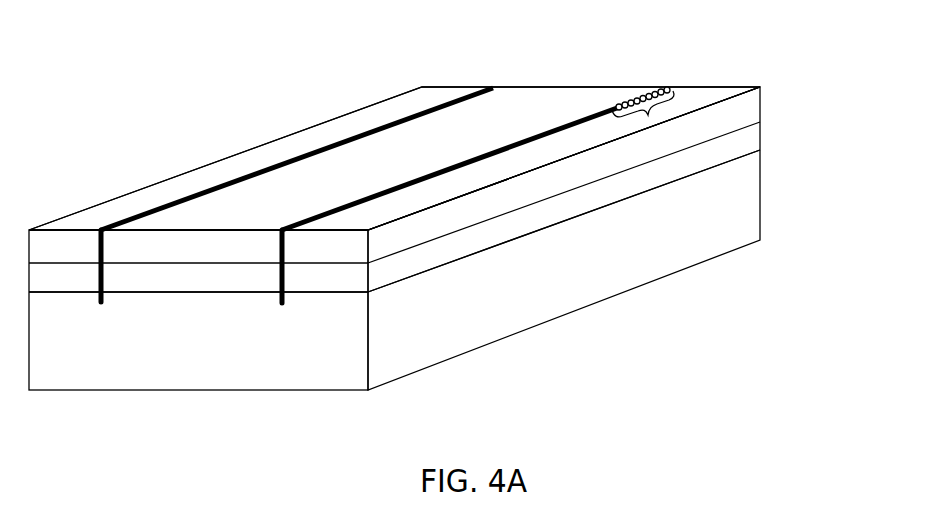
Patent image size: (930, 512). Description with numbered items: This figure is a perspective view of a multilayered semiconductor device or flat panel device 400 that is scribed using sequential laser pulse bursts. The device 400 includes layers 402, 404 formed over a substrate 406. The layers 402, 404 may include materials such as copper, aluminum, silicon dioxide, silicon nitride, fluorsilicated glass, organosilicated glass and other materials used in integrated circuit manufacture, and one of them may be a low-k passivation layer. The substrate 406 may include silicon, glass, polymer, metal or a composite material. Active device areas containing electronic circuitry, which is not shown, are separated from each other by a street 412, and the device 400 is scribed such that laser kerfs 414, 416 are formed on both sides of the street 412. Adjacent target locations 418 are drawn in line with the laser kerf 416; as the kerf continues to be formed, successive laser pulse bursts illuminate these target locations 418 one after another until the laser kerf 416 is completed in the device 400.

The multilayered semiconductor device or flat panel device 400 is at (230, 112).
The layer 402 is at (762, 105).
The layer 404 is at (762, 142).
The substrate 406 is at (762, 185).
The street 412 is at (535, 113).
The laser kerf 414 is at (378, 130).
The laser kerf 416 is at (590, 115).
The target locations 418 is at (648, 116).